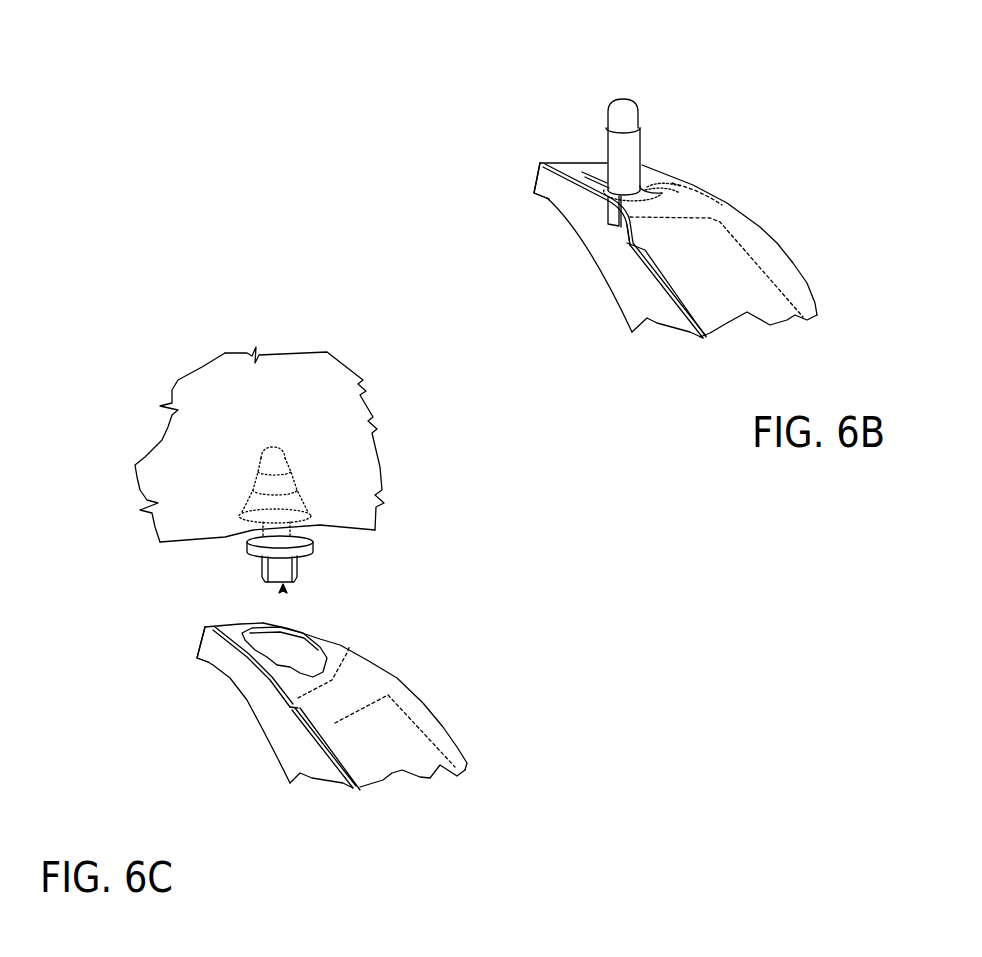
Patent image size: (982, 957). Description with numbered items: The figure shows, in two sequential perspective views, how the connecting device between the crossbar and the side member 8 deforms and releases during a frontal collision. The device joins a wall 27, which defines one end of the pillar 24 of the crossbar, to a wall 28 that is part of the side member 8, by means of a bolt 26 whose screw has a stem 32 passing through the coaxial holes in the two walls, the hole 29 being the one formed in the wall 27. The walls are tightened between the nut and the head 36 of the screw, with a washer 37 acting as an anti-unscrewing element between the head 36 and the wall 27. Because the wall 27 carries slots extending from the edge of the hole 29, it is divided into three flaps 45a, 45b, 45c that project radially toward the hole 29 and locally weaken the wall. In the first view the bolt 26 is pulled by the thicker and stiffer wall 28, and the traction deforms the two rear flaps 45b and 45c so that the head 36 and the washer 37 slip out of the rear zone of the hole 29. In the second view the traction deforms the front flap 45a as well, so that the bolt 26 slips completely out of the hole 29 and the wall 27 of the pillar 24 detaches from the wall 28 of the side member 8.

In FIG. 6C, the side member 8 is at (350, 403).
In FIG. 6B, the pillar 24 is at (792, 277).
In FIG. 6C, the pillar 24 is at (448, 747).
In FIG. 6C, the bolt 26 is at (283, 591).
In FIG. 6B, the wall 27 is at (680, 193).
In FIG. 6C, the wall 27 is at (333, 652).
In FIG. 6C, the wall 28 is at (360, 532).
In FIG. 6B, the hole 29 is at (642, 183).
In FIG. 6B, the stem 32 is at (640, 135).
In FIG. 6B, the head 36 is at (607, 207).
In FIG. 6C, the head 36 is at (300, 562).
In FIG. 6C, the washer 37 is at (247, 550).
In FIG. 6B, the front flap 45a is at (603, 162).
In FIG. 6C, the front flap 45a is at (262, 623).
In FIG. 6B, the rear flap 45b is at (647, 187).
In FIG. 6B, the rear flap 45c is at (622, 224).